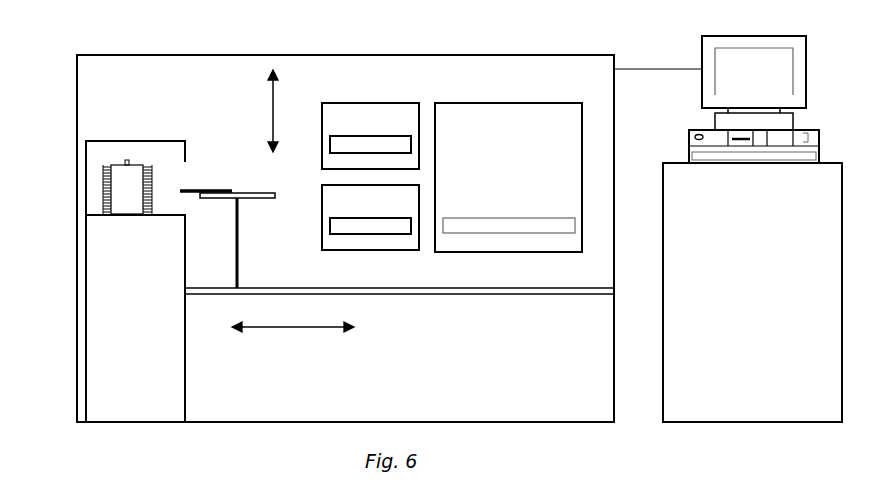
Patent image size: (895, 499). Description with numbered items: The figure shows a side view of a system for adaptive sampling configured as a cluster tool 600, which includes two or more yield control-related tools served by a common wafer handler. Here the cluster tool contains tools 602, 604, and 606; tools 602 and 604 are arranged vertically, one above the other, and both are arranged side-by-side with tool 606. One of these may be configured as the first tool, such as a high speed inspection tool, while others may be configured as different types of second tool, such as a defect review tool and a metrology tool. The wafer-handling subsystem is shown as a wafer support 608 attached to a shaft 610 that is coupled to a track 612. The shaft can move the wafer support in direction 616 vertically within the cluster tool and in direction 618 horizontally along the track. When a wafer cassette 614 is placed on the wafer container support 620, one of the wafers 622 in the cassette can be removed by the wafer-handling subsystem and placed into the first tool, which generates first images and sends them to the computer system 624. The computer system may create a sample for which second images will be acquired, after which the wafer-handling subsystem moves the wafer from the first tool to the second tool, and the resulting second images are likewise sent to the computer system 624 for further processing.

The cluster tool 600 is at (145, 54).
The tool 602 is at (370, 136).
The tool 604 is at (370, 217).
The tool 606 is at (508, 177).
The wafer support 608 is at (248, 191).
The shaft 610 is at (238, 240).
The track 612 is at (533, 294).
The wafer cassette 614 is at (128, 187).
The direction 616 is at (272, 130).
The direction 618 is at (298, 328).
The wafer container support 620 is at (86, 175).
The wafers 622 is at (107, 202).
The computer system 624 is at (783, 36).